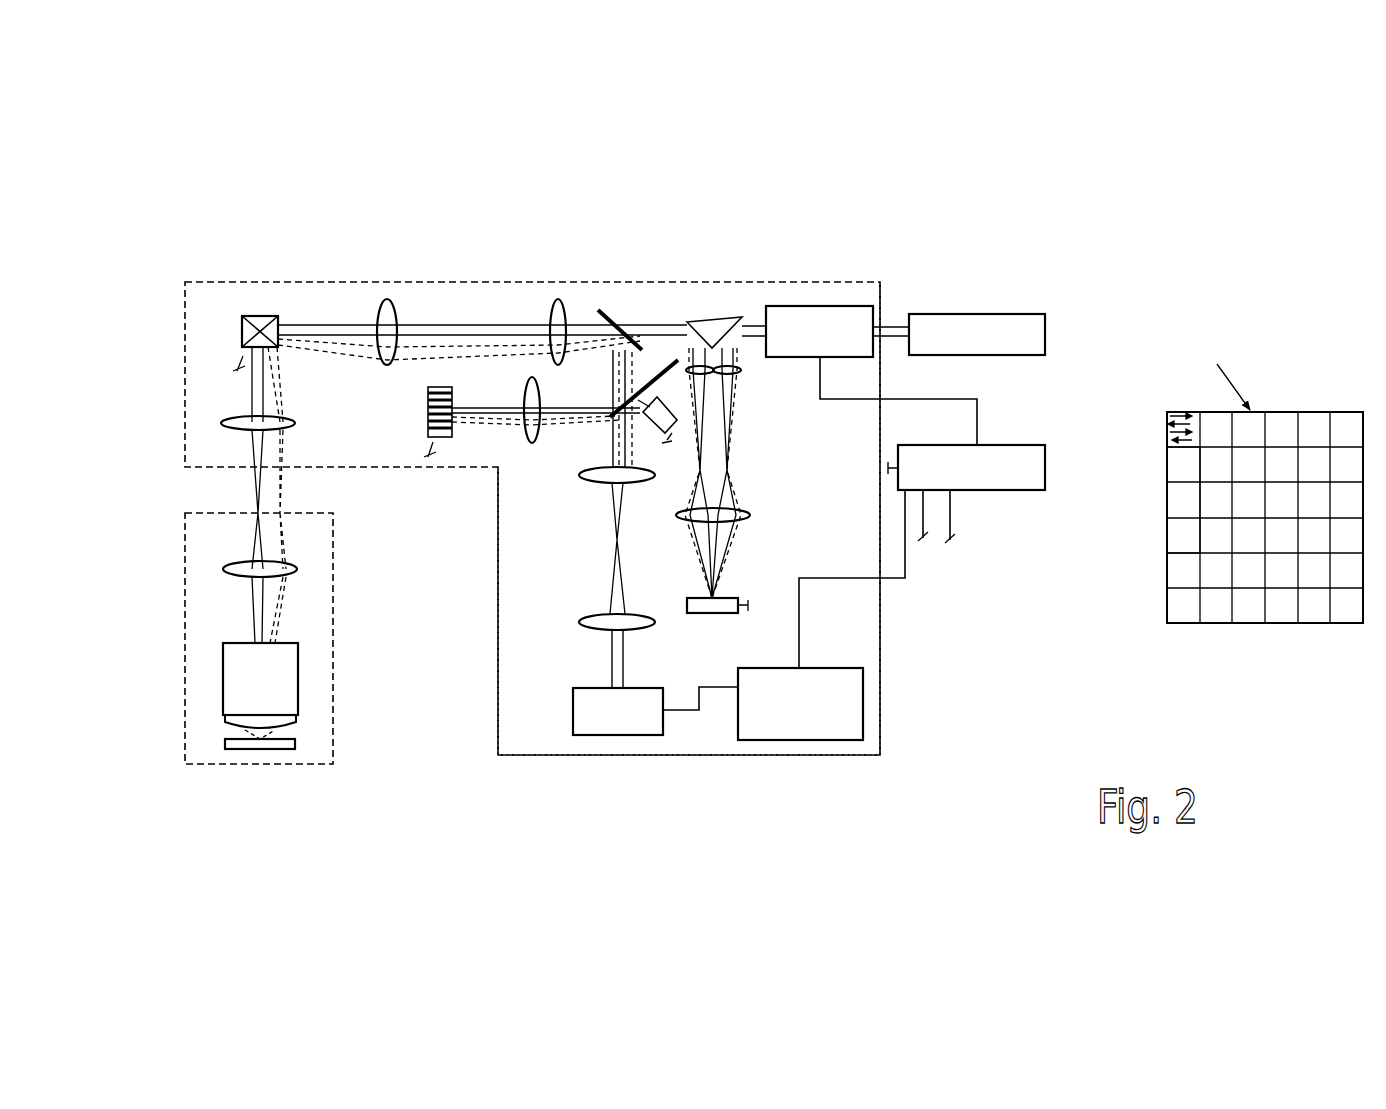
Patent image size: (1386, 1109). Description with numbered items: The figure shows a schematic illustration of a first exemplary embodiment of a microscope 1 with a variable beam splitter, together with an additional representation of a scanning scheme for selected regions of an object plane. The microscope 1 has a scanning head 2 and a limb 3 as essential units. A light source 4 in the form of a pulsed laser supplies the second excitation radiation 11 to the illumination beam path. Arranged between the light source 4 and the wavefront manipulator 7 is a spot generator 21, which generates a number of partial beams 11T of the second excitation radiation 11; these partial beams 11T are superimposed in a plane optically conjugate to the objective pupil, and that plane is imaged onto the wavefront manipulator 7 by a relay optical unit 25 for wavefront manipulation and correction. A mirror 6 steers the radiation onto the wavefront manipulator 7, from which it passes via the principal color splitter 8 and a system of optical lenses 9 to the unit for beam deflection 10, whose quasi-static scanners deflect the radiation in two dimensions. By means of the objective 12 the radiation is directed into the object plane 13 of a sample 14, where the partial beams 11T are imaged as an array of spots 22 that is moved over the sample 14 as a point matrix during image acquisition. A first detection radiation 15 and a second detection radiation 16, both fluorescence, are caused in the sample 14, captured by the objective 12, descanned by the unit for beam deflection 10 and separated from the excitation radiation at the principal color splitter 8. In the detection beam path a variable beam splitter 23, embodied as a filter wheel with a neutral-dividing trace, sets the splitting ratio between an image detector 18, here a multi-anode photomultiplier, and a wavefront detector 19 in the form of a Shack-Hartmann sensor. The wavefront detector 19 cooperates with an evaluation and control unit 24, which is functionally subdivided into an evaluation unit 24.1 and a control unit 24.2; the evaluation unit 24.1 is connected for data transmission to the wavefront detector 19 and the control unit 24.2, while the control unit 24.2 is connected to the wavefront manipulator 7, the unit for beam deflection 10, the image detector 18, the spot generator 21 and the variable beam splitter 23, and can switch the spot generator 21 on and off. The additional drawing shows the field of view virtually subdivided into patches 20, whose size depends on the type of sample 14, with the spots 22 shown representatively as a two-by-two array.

The microscope 1 is at (285, 250).
The scanning head 2 is at (882, 598).
The limb 3 is at (334, 653).
The light source 4 is at (977, 334).
The mirror 6 is at (712, 320).
The wavefront manipulator 7 is at (737, 596).
The principal color splitter 8 is at (602, 308).
The system of optical lenses 9 is at (552, 300).
The unit for beam deflection 10 is at (242, 317).
The second excitation radiation 11 is at (891, 327).
The partial beams 11T is at (280, 505).
The objective 12 is at (260, 685).
The object plane 13 is at (1178, 331).
The sample 14 is at (296, 742).
The first detection radiation 15 is at (612, 660).
The second detection radiation 16 is at (477, 420).
The image detector 18 is at (452, 438).
The wavefront detector 19 is at (655, 711).
The patches 20 is at (1167, 528).
The spot generator 21 is at (819, 331).
The spots 22 is at (1175, 424).
The variable beam splitter 23 is at (604, 422).
The evaluation and control unit 24 is at (864, 693).
The evaluation unit 24.1 is at (800, 704).
The control unit 24.2 is at (966, 494).
The relay optical unit 25 is at (738, 372).